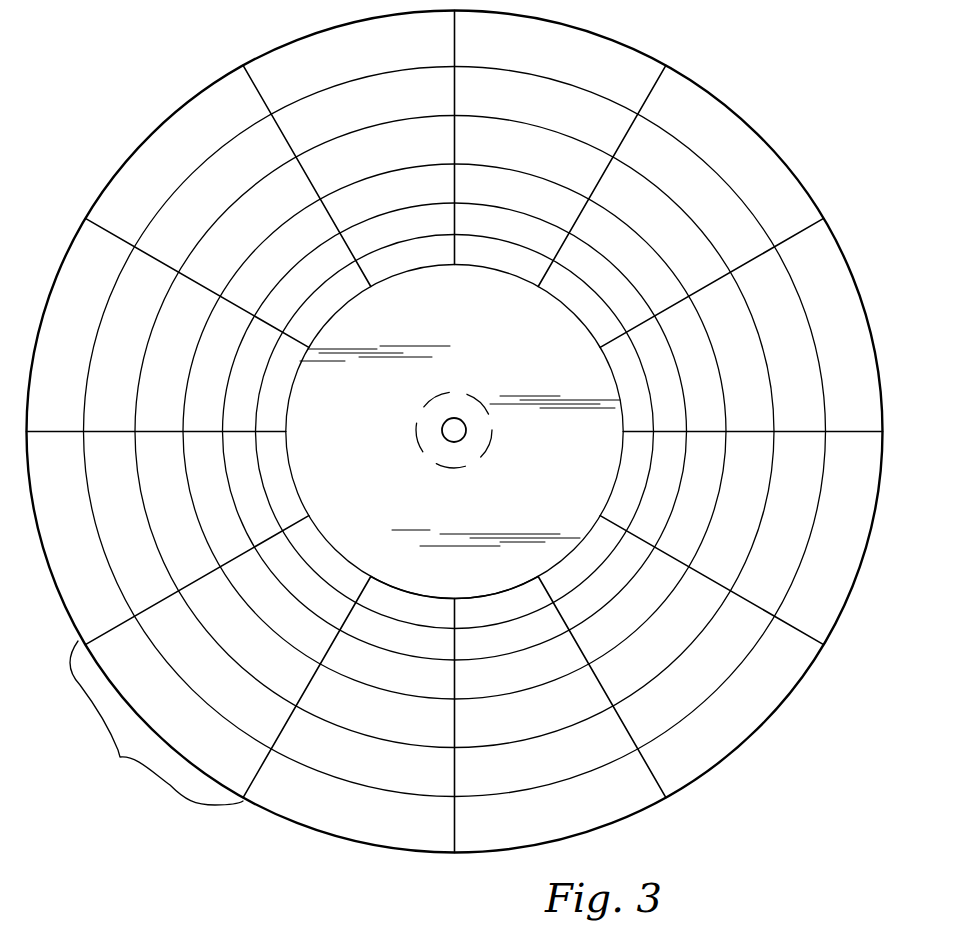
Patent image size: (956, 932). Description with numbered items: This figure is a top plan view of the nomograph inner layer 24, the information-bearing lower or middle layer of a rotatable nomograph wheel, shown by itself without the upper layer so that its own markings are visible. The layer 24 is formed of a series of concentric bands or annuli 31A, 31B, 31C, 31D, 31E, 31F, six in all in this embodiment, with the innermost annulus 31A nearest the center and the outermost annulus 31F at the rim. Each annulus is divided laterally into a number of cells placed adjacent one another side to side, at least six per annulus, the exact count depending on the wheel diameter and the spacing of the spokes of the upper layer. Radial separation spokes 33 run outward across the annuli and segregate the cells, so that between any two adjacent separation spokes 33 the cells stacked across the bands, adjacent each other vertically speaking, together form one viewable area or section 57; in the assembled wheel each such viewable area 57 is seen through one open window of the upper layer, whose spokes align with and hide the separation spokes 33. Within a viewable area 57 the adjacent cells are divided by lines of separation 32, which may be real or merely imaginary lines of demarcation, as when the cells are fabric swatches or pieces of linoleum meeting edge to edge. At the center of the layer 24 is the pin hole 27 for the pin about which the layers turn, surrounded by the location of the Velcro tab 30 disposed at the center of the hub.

The nomograph inner layer 24 is at (166, 72).
The pin hole 27 is at (452, 418).
The Velcro tab 30 is at (460, 470).
The annulus 31A is at (572, 297).
The annulus 31B is at (607, 278).
The annulus 31C is at (660, 280).
The annulus 31D is at (635, 200).
The annulus 31E is at (693, 185).
The annulus 31F is at (762, 178).
The lines of separation 32 is at (570, 670).
The separation spokes 33 is at (267, 433).
The viewable area 57 is at (120, 757).